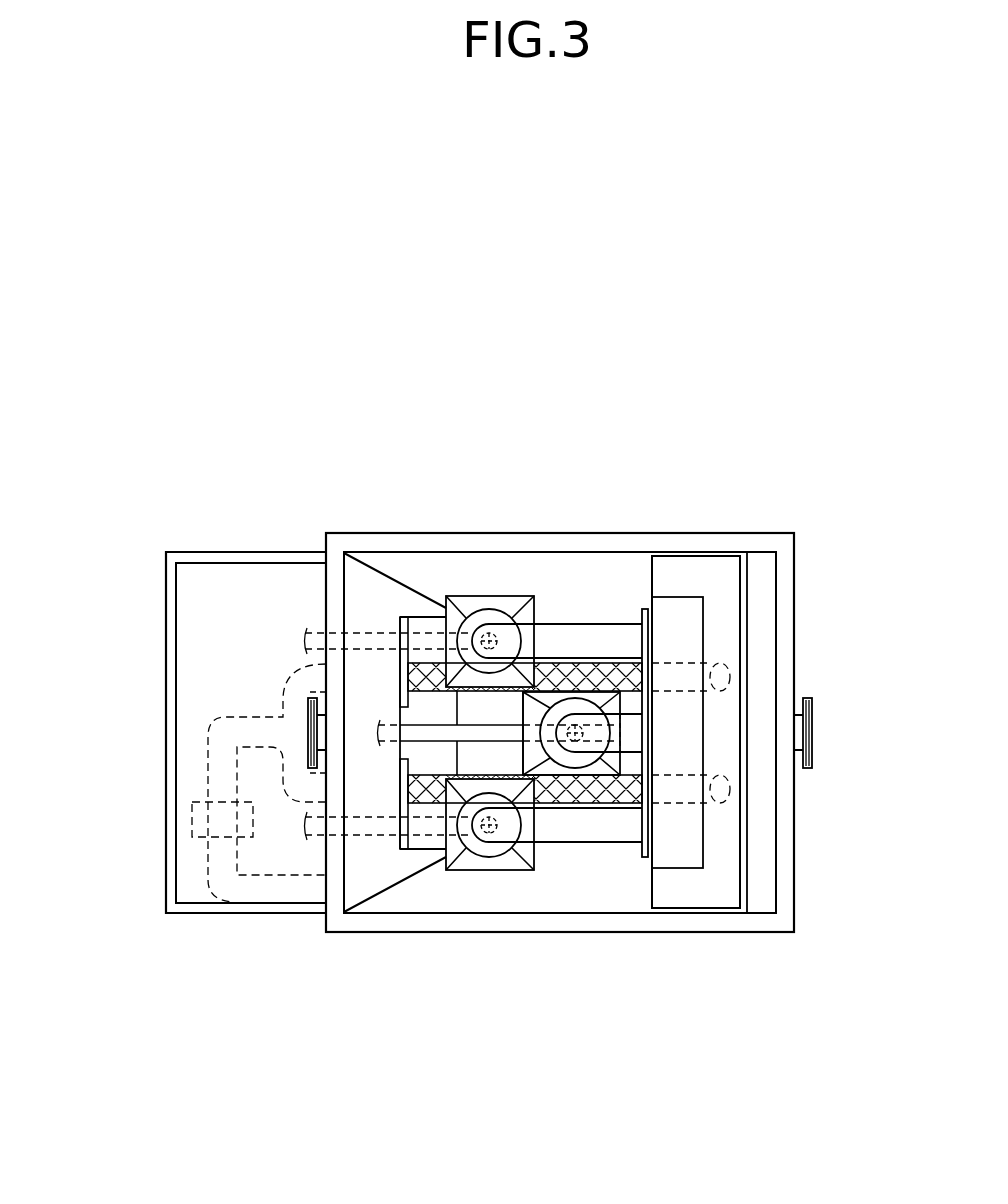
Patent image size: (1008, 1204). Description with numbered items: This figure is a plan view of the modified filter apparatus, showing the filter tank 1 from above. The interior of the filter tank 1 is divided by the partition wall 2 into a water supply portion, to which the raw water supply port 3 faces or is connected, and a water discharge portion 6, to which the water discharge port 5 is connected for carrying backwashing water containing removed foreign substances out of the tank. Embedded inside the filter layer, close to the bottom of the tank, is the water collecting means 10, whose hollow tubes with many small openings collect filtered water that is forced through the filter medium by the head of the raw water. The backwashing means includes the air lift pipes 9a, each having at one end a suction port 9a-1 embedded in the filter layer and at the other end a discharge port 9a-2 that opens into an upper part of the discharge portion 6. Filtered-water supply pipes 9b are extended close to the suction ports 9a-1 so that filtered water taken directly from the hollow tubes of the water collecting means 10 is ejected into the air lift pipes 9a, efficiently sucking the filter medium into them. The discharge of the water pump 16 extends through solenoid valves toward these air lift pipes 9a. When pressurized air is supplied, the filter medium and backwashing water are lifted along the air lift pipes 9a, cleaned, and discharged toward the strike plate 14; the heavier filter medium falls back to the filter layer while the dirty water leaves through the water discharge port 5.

The filter tank 1 is at (635, 530).
The partition wall 2 is at (648, 882).
The raw water supply port 3 is at (309, 732).
The water discharge port 5 is at (812, 741).
The water discharge portion 6 is at (717, 885).
The air lift pipe 9a is at (595, 637).
The suction port 9a-1 is at (543, 660).
The discharge port 9a-2 is at (652, 637).
The filtered-water supply pipe 9b is at (481, 604).
The water collecting means 10 is at (552, 663).
The strike plate 14 is at (697, 818).
The water pump 16 is at (215, 831).